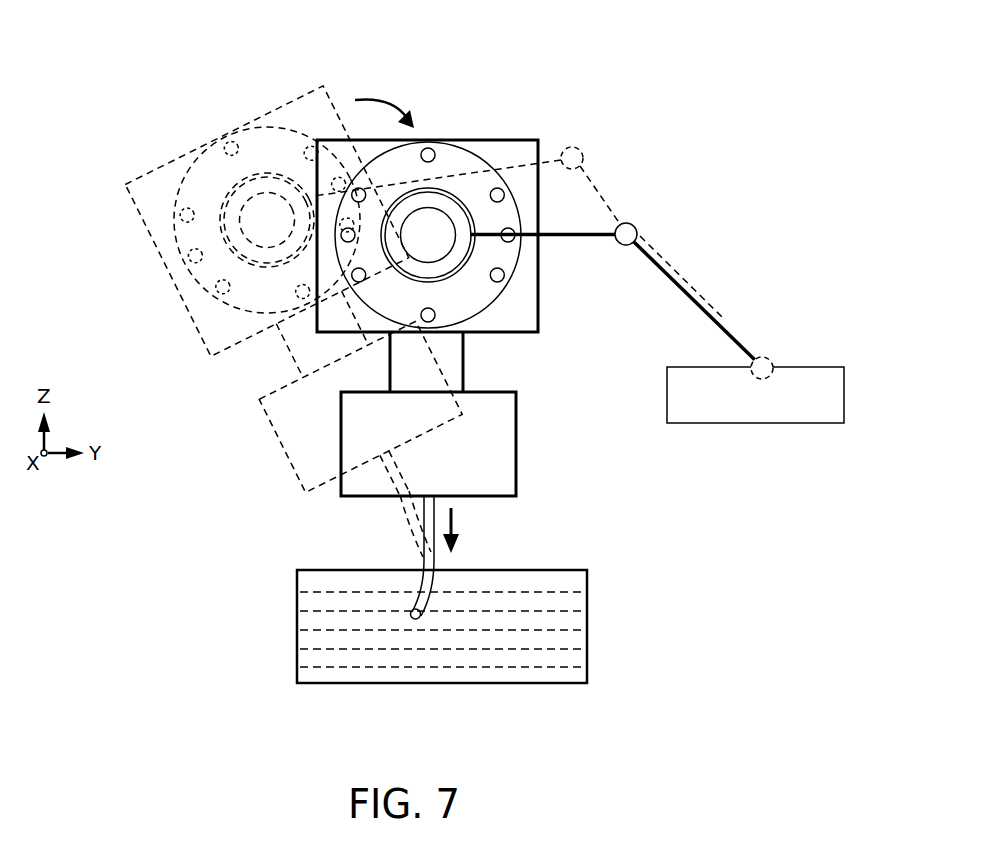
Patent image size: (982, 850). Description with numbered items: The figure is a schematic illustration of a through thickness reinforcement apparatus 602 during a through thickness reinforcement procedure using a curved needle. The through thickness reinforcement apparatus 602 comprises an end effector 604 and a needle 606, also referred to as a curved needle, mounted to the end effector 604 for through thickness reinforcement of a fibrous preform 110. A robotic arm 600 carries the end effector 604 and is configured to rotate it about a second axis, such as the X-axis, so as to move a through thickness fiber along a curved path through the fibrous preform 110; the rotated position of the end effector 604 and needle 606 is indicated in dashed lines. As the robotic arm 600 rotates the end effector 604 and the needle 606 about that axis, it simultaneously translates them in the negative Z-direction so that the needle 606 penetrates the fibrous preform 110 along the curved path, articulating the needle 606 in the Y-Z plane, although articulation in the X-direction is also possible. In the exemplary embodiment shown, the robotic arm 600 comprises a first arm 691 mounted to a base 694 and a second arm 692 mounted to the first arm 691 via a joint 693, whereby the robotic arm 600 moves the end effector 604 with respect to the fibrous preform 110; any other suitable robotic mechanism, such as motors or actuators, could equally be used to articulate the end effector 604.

The robotic arm 600 is at (698, 152).
The through thickness reinforcement apparatus 602 is at (502, 88).
The end effector 604 is at (517, 333).
The needle 606 is at (425, 598).
The fibrous preform 110 is at (297, 609).
The first arm 691 is at (687, 295).
The second arm 692 is at (583, 237).
The joint 693 is at (639, 232).
The base 694 is at (732, 409).